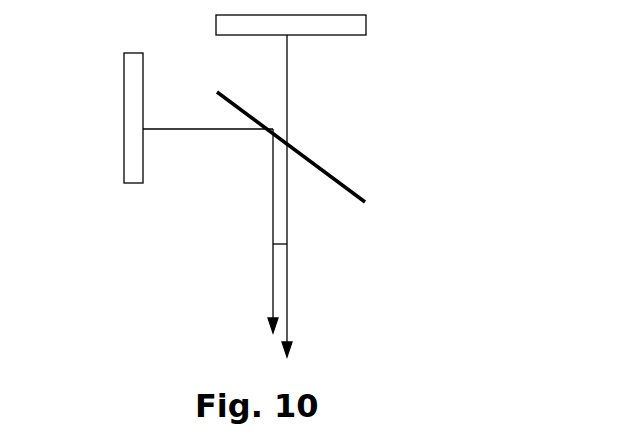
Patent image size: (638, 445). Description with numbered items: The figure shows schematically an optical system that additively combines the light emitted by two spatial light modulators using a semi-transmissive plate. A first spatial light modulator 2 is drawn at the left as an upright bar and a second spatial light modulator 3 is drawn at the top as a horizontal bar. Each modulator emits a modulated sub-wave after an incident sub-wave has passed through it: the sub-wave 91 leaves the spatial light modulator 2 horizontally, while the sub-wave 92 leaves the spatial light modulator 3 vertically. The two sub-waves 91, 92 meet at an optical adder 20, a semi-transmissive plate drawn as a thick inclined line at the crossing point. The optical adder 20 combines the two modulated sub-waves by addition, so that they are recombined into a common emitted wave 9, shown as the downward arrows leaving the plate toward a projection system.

The spatial light modulator 2 is at (137, 184).
The spatial light modulator 3 is at (360, 36).
The common emitted wave 9 is at (287, 243).
The optical adder 20 is at (348, 188).
The sub-wave 91 is at (188, 131).
The sub-wave 92 is at (287, 110).